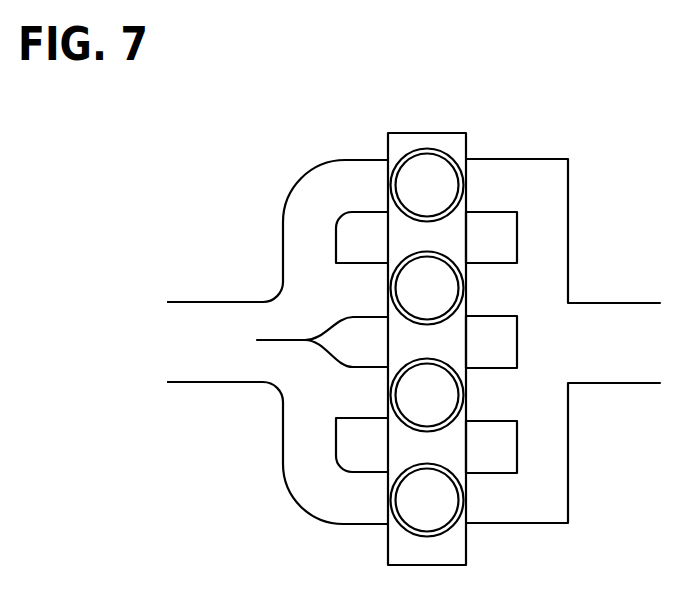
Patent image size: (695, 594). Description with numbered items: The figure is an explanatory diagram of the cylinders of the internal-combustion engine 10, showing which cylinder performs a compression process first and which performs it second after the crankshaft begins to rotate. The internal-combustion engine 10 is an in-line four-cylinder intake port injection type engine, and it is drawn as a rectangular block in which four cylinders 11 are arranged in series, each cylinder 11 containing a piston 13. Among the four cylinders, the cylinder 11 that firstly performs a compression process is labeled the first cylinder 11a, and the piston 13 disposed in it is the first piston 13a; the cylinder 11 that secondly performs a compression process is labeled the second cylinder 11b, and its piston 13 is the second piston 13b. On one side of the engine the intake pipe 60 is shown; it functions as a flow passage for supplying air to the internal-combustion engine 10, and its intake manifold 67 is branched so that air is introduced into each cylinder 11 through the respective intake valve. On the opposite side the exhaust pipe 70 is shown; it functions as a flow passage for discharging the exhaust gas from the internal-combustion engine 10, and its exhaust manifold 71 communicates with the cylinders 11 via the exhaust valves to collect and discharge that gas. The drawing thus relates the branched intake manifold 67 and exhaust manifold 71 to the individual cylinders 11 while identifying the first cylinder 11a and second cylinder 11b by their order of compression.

The internal-combustion engine 10 is at (423, 133).
The first cylinder 11a is at (447, 153).
The second cylinder 11b is at (443, 257).
The cylinder 11 is at (448, 425).
The first piston 13a is at (447, 198).
The second piston 13b is at (447, 301).
The piston 13 is at (441, 408).
The intake pipe 60 is at (600, 318).
The intake manifold 67 is at (545, 423).
The exhaust pipe 70 is at (188, 317).
The exhaust manifold 71 is at (308, 262).